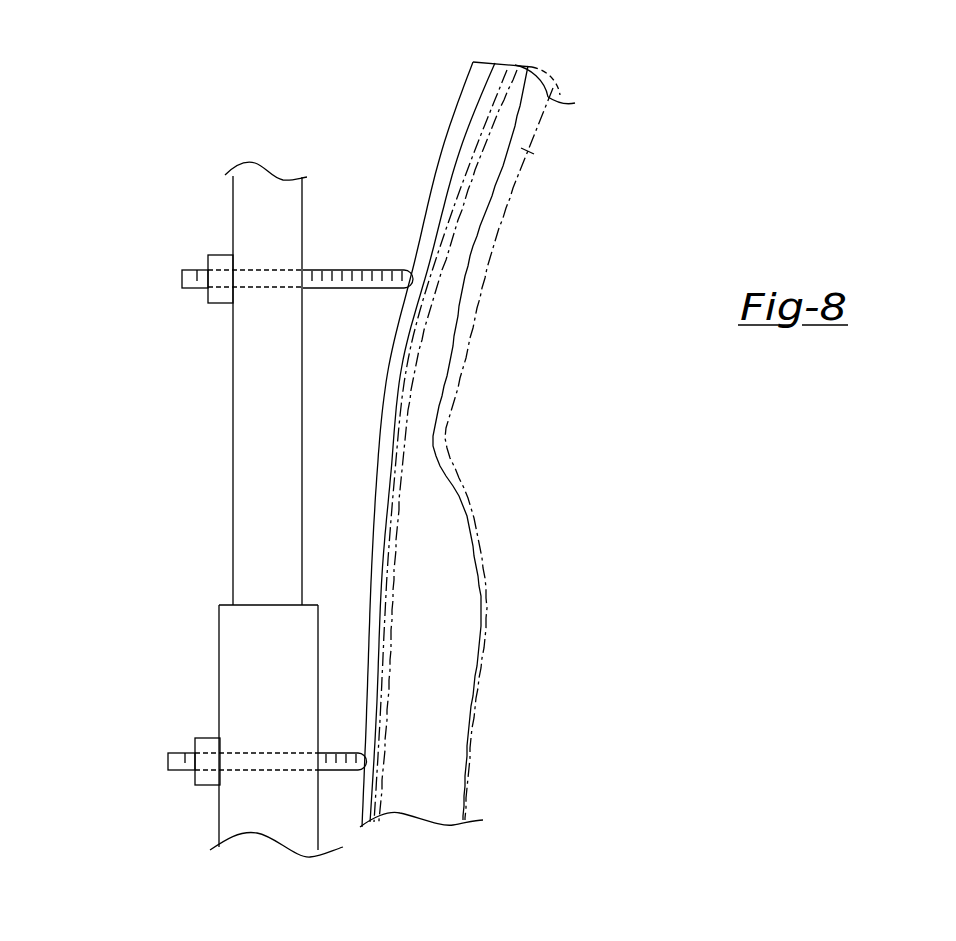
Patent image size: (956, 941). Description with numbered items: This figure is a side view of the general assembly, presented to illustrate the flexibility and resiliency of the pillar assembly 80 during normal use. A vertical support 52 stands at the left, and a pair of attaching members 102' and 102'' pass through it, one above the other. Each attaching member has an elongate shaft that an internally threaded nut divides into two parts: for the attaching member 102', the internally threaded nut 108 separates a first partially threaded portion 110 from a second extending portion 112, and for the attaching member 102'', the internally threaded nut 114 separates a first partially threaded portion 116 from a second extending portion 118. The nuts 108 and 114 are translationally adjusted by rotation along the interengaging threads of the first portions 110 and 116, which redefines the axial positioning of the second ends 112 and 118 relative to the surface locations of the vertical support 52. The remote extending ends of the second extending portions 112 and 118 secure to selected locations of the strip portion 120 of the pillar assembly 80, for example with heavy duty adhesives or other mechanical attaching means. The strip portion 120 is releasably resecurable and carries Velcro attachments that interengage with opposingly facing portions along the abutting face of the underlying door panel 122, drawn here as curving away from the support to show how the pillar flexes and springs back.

The vertical support 52 is at (180, 562).
The pillar assembly 80 is at (540, 46).
The strip portion 120 is at (475, 103).
The door panel 122 is at (530, 152).
The attaching member 102' is at (240, 278).
The first partially threaded portion 116 is at (182, 277).
The internally threaded nut 114 is at (215, 303).
The second extending portion 118 is at (378, 268).
The attaching member 102'' is at (224, 770).
The first partially threaded portion 110 is at (173, 753).
The internally threaded nut 108 is at (202, 787).
The second extending portion 112 is at (340, 752).